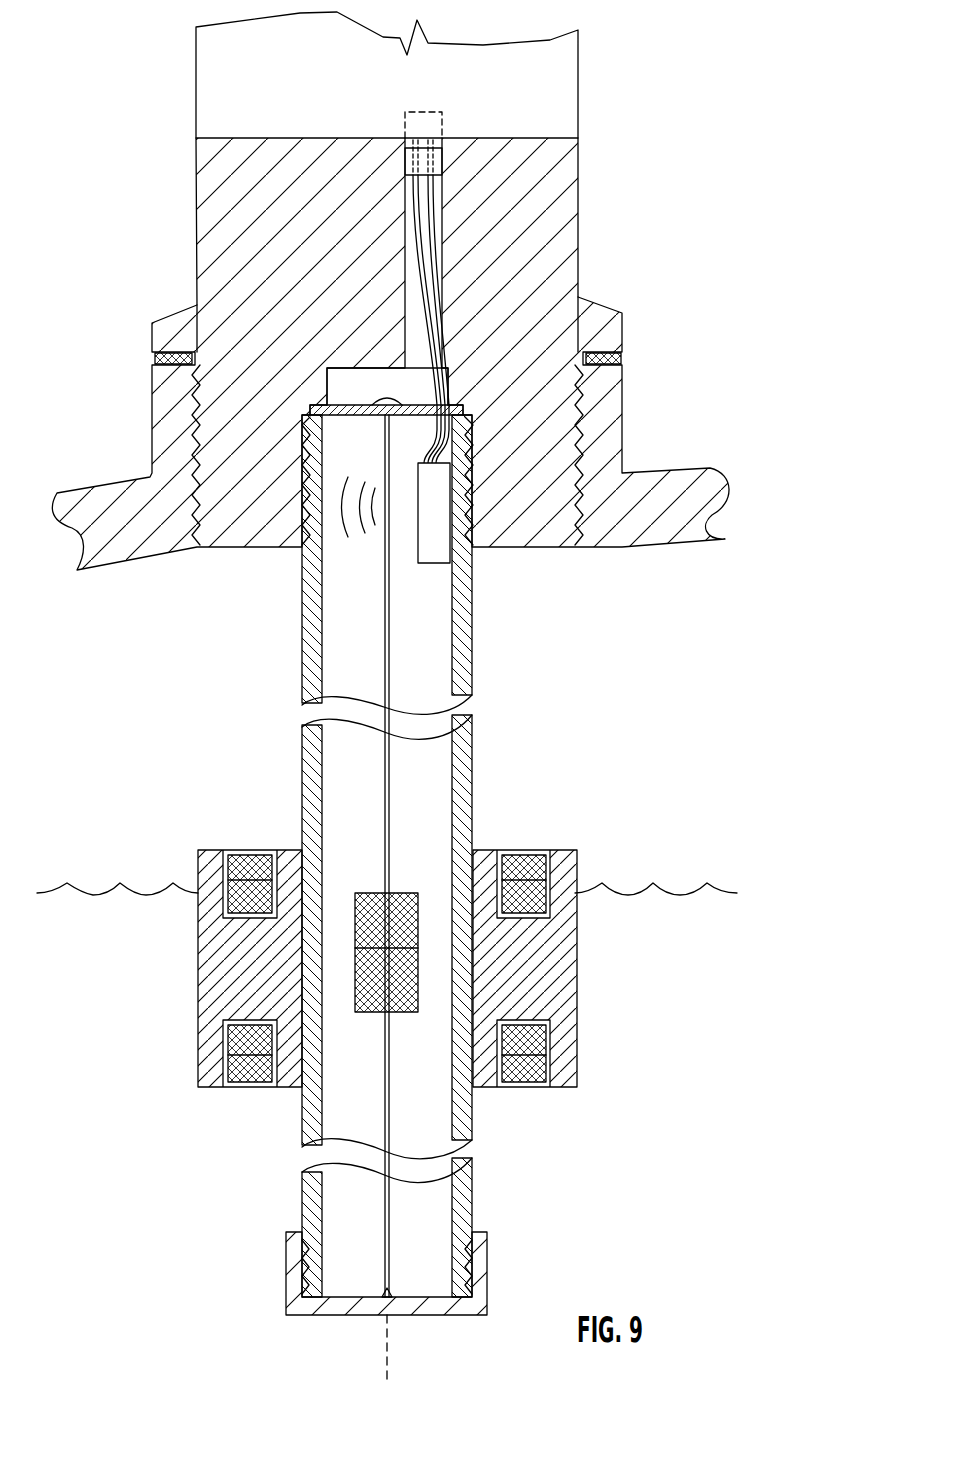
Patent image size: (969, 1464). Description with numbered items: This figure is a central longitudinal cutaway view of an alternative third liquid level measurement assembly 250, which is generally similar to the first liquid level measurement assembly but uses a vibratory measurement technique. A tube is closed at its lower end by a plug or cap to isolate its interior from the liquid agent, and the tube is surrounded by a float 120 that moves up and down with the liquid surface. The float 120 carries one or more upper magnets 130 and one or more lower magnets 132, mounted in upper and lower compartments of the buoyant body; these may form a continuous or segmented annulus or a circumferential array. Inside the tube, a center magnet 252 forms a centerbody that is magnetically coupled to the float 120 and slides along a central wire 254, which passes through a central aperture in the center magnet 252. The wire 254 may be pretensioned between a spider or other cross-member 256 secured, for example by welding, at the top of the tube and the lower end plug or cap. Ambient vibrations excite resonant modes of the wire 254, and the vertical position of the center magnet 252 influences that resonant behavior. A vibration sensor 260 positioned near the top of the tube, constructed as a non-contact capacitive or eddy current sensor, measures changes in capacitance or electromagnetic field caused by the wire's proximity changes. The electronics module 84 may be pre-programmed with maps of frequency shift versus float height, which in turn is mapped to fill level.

The electronics module 84 is at (294, 100).
The float 120 is at (603, 964).
The upper magnets 130 is at (533, 826).
The lower magnets 132 is at (240, 1106).
The third liquid level measurement assembly 250 is at (638, 683).
The center magnet 252 is at (418, 1040).
The central wire 254 is at (385, 1200).
The cross-member 256 is at (340, 402).
The vibration sensor 260 is at (453, 521).